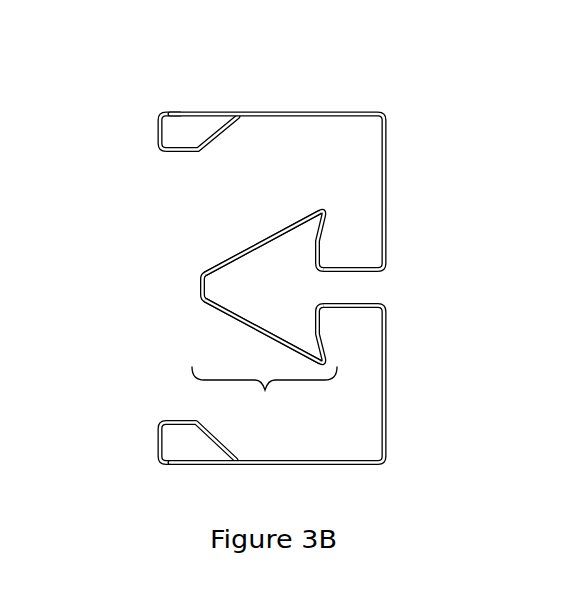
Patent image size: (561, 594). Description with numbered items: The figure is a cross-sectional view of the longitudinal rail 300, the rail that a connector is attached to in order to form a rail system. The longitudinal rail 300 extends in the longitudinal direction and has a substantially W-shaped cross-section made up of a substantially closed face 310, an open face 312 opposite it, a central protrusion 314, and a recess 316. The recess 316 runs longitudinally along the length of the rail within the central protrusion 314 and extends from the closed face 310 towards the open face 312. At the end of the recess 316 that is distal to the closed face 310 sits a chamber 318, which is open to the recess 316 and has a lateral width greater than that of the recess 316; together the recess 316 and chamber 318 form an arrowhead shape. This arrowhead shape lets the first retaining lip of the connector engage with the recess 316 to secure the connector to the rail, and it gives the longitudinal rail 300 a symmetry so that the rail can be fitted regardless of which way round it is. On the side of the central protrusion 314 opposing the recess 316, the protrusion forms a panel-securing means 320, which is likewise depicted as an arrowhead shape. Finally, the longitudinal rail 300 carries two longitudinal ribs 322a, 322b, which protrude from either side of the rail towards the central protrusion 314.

The longitudinal rail 300 is at (265, 289).
The closed face 310 is at (388, 217).
The open face 312 is at (177, 240).
The central protrusion 314 is at (222, 318).
The recess 316 is at (387, 290).
The chamber 318 is at (282, 262).
The panel-securing means 320 is at (264, 395).
The longitudinal rib 322a is at (157, 453).
The longitudinal rib 322b is at (157, 129).